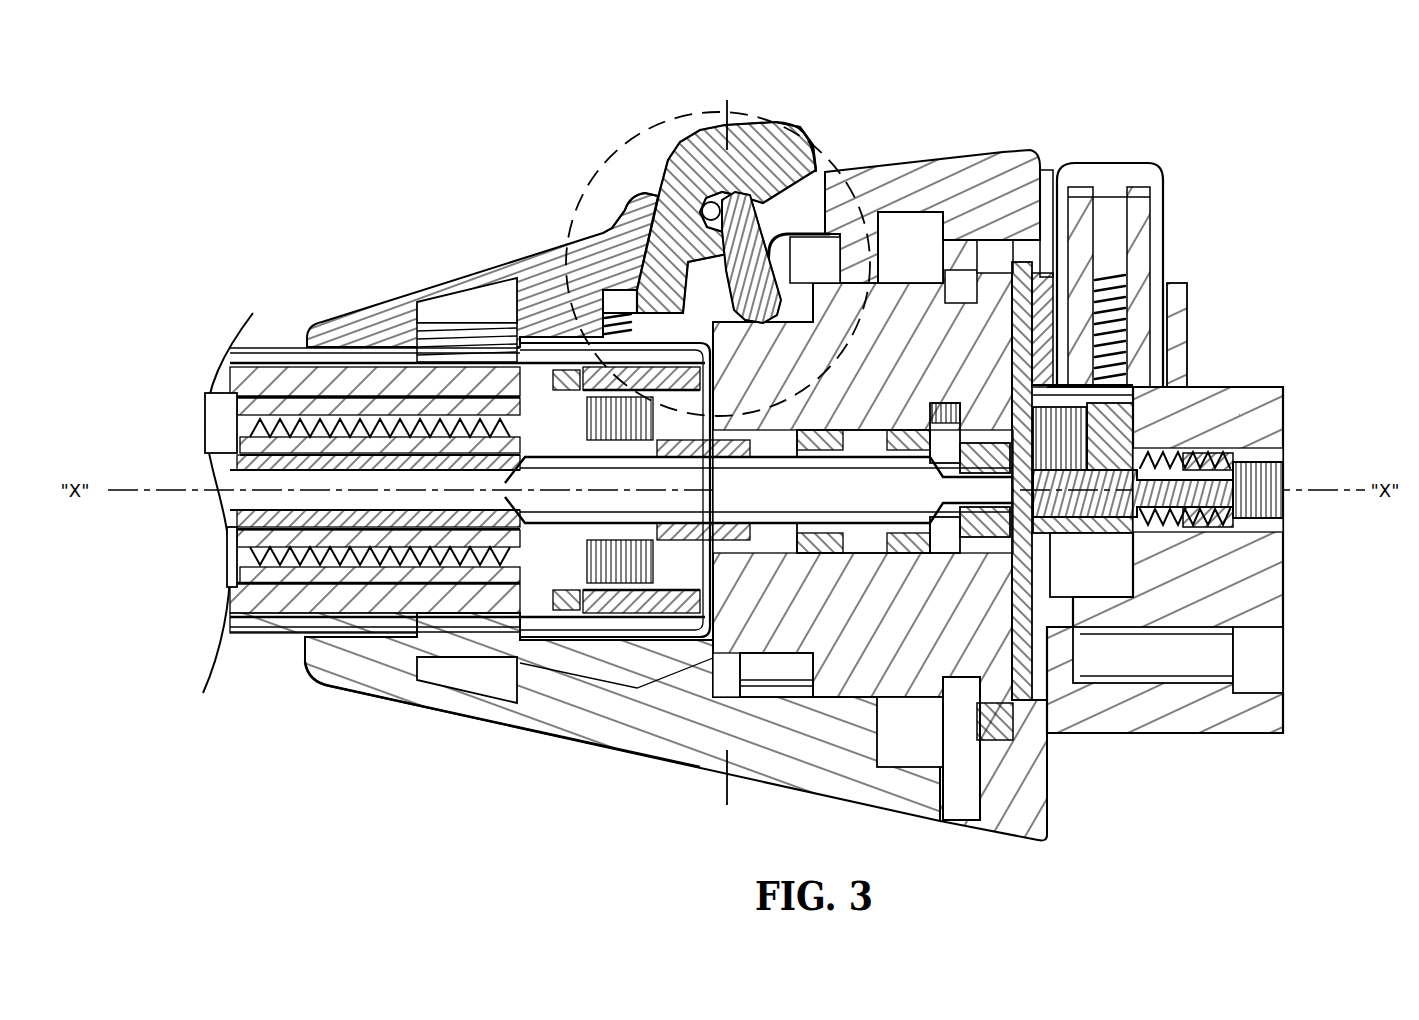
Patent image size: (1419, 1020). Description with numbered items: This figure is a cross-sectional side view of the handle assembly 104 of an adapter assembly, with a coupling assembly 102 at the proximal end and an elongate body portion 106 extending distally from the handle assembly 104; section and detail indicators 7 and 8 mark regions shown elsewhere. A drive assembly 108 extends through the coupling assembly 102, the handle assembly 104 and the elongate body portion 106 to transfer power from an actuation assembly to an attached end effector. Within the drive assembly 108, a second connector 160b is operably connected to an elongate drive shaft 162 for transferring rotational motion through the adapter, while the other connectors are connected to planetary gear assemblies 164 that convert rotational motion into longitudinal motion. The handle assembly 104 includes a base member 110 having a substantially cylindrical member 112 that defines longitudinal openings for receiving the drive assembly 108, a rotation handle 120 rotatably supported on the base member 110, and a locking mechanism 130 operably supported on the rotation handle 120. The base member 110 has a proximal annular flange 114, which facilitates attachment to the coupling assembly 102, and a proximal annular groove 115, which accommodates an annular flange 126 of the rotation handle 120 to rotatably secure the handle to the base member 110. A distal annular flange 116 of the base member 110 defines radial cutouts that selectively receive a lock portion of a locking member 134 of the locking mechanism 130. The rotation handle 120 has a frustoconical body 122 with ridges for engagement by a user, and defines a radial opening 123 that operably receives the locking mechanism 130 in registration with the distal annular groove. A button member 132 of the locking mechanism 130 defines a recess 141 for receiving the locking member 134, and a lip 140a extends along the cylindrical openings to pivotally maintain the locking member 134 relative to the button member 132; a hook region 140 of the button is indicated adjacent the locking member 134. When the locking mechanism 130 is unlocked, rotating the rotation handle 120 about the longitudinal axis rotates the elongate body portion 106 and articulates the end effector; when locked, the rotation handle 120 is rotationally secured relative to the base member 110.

The coupling assembly 102 is at (1222, 338).
The handle assembly 104 is at (895, 72).
The elongate body portion 106 is at (285, 300).
The drive assembly 108 is at (640, 690).
The base member 110 is at (843, 708).
The substantially cylindrical member 112 is at (898, 670).
The proximal annular flange 114 is at (1055, 735).
The proximal annular groove 115 is at (1195, 618).
The distal annular flange 116 is at (637, 688).
The rotation handle 120 is at (932, 145).
The frustoconical body 122 is at (520, 712).
The radial opening 123 is at (640, 205).
The annular flange 126 is at (975, 692).
The locking mechanism 130 is at (667, 184).
The button member 132 is at (648, 158).
The locking member 134 is at (765, 210).
The hook portion 140 is at (785, 150).
The lip 140a is at (512, 283).
The recess 141 is at (612, 228).
The second connector 160b is at (1268, 455).
The elongate drive shaft 162 is at (355, 517).
The planetary gear assemblies 164 is at (237, 358).
The section line 7 is at (718, 118).
The detail circle 8 is at (577, 197).